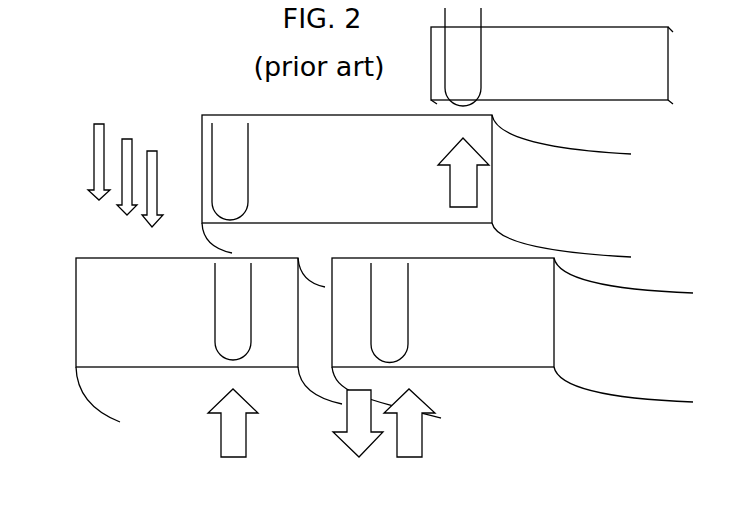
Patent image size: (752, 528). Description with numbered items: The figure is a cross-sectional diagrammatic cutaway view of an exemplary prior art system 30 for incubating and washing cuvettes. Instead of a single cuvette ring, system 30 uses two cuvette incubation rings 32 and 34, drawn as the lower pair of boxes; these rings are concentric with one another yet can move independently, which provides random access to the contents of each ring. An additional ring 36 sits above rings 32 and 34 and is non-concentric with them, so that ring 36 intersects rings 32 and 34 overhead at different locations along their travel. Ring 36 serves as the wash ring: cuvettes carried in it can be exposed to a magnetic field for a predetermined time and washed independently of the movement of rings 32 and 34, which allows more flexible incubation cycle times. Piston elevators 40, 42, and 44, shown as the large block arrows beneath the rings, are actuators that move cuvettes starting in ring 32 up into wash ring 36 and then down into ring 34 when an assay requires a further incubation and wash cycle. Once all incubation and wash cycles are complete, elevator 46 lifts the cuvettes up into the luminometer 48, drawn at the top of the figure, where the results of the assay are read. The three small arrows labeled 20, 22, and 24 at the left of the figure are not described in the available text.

The incident beam 20 is at (100, 152).
The incident beam 22 is at (129, 167).
The incident beam 24 is at (156, 178).
The prior art system 30 is at (359, 340).
The cuvette incubation ring 32 is at (209, 331).
The cuvette incubation ring 34 is at (512, 338).
The wash ring 36 is at (416, 186).
The piston elevator 40 is at (233, 443).
The piston elevator 42 is at (358, 443).
The piston elevator 44 is at (409, 443).
The elevator 46 is at (463, 165).
The luminometer 48 is at (552, 57).